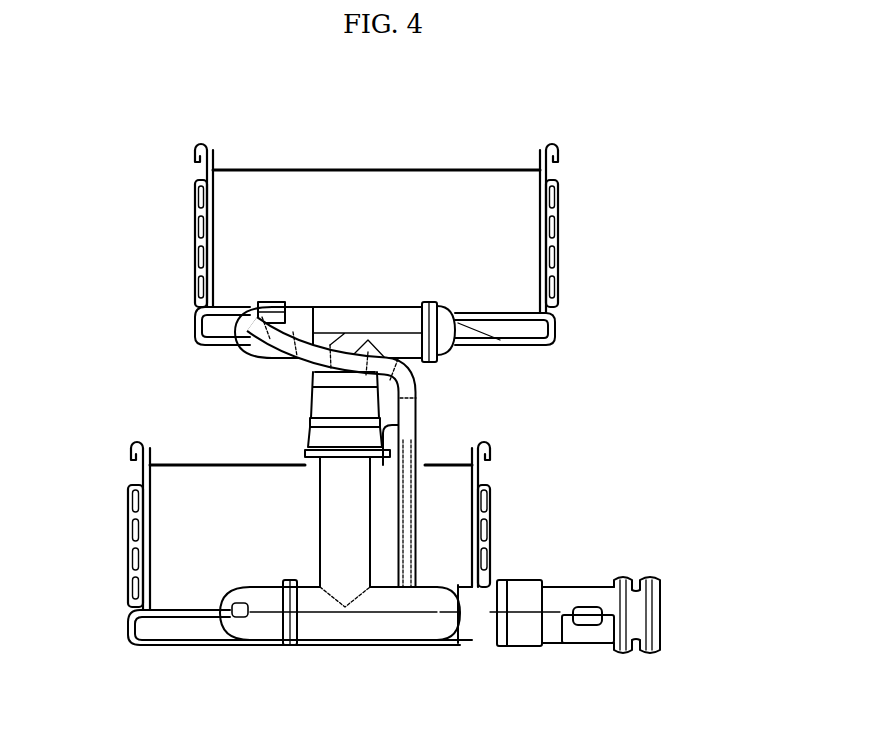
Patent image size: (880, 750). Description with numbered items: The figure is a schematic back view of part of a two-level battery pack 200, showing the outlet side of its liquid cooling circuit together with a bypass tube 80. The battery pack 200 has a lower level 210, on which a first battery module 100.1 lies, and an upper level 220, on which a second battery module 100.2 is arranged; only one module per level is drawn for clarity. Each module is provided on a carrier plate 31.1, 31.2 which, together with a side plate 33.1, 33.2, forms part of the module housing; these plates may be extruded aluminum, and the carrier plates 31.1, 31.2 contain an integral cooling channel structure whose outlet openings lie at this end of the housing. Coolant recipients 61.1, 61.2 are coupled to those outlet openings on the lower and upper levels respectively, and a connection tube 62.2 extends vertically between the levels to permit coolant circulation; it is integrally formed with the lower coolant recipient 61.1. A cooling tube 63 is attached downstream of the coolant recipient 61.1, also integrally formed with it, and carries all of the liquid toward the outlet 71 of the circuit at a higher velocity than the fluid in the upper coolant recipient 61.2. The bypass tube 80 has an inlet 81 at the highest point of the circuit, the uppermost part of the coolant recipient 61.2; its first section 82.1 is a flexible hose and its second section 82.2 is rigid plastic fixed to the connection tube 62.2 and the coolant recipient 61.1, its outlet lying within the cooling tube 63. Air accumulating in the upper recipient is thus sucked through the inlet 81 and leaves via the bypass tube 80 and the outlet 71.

The battery pack 200 is at (397, 81).
The upper level 220 is at (622, 245).
The lower level 210 is at (675, 509).
The second battery module 100.2 is at (410, 253).
The first battery module 100.1 is at (260, 545).
The side plate 33.2 is at (193, 190).
The side plate 33.1 is at (128, 488).
The carrier plate 31.2 is at (560, 328).
The carrier plate 31.1 is at (128, 620).
The first section of the bypass tube 82.1 is at (205, 318).
The second section of the bypass tube 82.2 is at (424, 456).
The inlet of the bypass tube 81 is at (311, 290).
The bypass tube 80 is at (255, 362).
The coolant recipient 61.2 is at (455, 352).
The coolant recipient 61.1 is at (358, 625).
The connection tube 62.2 is at (332, 497).
The cooling tube 63 is at (424, 625).
The outlet of the cooling circuit 71 is at (665, 620).